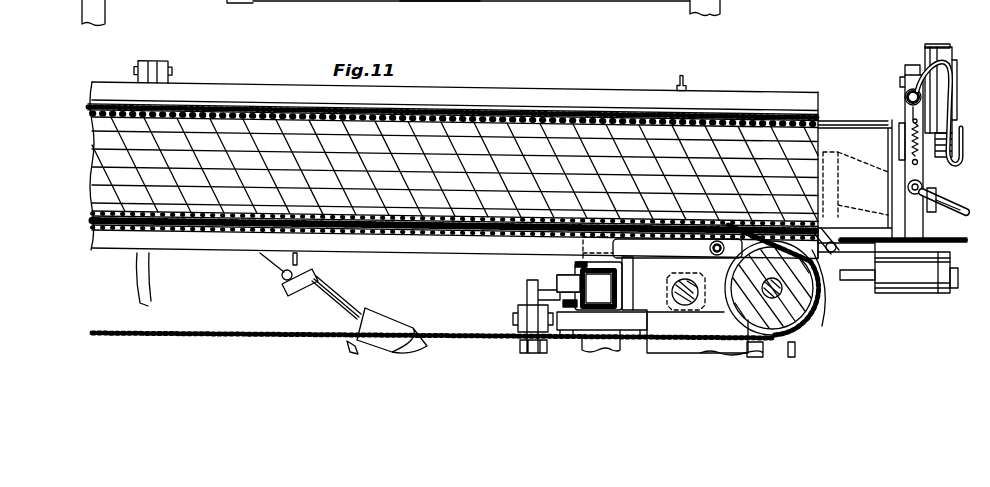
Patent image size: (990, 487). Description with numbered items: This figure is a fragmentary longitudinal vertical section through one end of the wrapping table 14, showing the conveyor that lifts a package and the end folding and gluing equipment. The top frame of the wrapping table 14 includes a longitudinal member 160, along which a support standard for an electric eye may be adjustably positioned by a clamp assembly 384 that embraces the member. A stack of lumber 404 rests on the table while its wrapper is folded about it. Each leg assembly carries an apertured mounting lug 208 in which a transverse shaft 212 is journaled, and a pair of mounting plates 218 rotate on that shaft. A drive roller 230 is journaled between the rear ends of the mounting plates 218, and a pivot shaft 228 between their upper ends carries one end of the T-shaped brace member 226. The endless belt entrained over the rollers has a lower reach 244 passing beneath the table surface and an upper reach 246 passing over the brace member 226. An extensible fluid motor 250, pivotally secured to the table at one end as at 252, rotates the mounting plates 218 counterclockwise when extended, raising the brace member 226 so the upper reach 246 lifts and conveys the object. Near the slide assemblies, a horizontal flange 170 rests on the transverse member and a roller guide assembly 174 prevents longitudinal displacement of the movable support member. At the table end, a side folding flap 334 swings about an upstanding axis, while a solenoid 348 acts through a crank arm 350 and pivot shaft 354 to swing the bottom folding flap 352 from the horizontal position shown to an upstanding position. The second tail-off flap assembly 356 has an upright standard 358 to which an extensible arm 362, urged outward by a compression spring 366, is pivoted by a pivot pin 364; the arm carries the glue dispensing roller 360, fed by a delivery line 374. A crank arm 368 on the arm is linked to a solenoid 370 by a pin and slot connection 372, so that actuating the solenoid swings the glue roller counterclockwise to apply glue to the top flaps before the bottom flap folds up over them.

The wrapping table 14 is at (552, 74).
The longitudinal member 160 is at (442, 0).
The clamp assembly 384 is at (254, 2).
The stack of lumber 404 is at (558, 133).
The upper reach 246 is at (362, 234).
The brace member 226 is at (231, 252).
The pivot shaft 228 is at (715, 239).
The side folding flap 334 is at (864, 170).
The pivotal connection of fluid motor 252 is at (281, 280).
The extensible fluid motor 250 is at (391, 304).
The lower reach 244 is at (163, 331).
The roller guide assembly 174 is at (519, 297).
The horizontal flange 170 is at (582, 268).
The mounting plate 218 is at (690, 258).
The transverse shaft 212 is at (672, 292).
The mounting lug 208 is at (657, 303).
The drive roller 230 is at (803, 330).
The pivot shaft 354 is at (813, 222).
The crank arm 350 is at (832, 262).
The bottom folding flap 352 is at (872, 281).
The solenoid 348 is at (918, 291).
The upright standard 358 is at (942, 240).
The tail-off flap assembly 356 is at (904, 55).
The glue dispensing roller 360 is at (905, 90).
The arm 362 is at (905, 108).
The compression spring 366 is at (903, 130).
The pivot pin 364 is at (923, 188).
The pin and slot connection 372 is at (950, 204).
The crank arm 368 is at (932, 212).
The solenoid 370 is at (941, 44).
The delivery line 374 is at (957, 66).